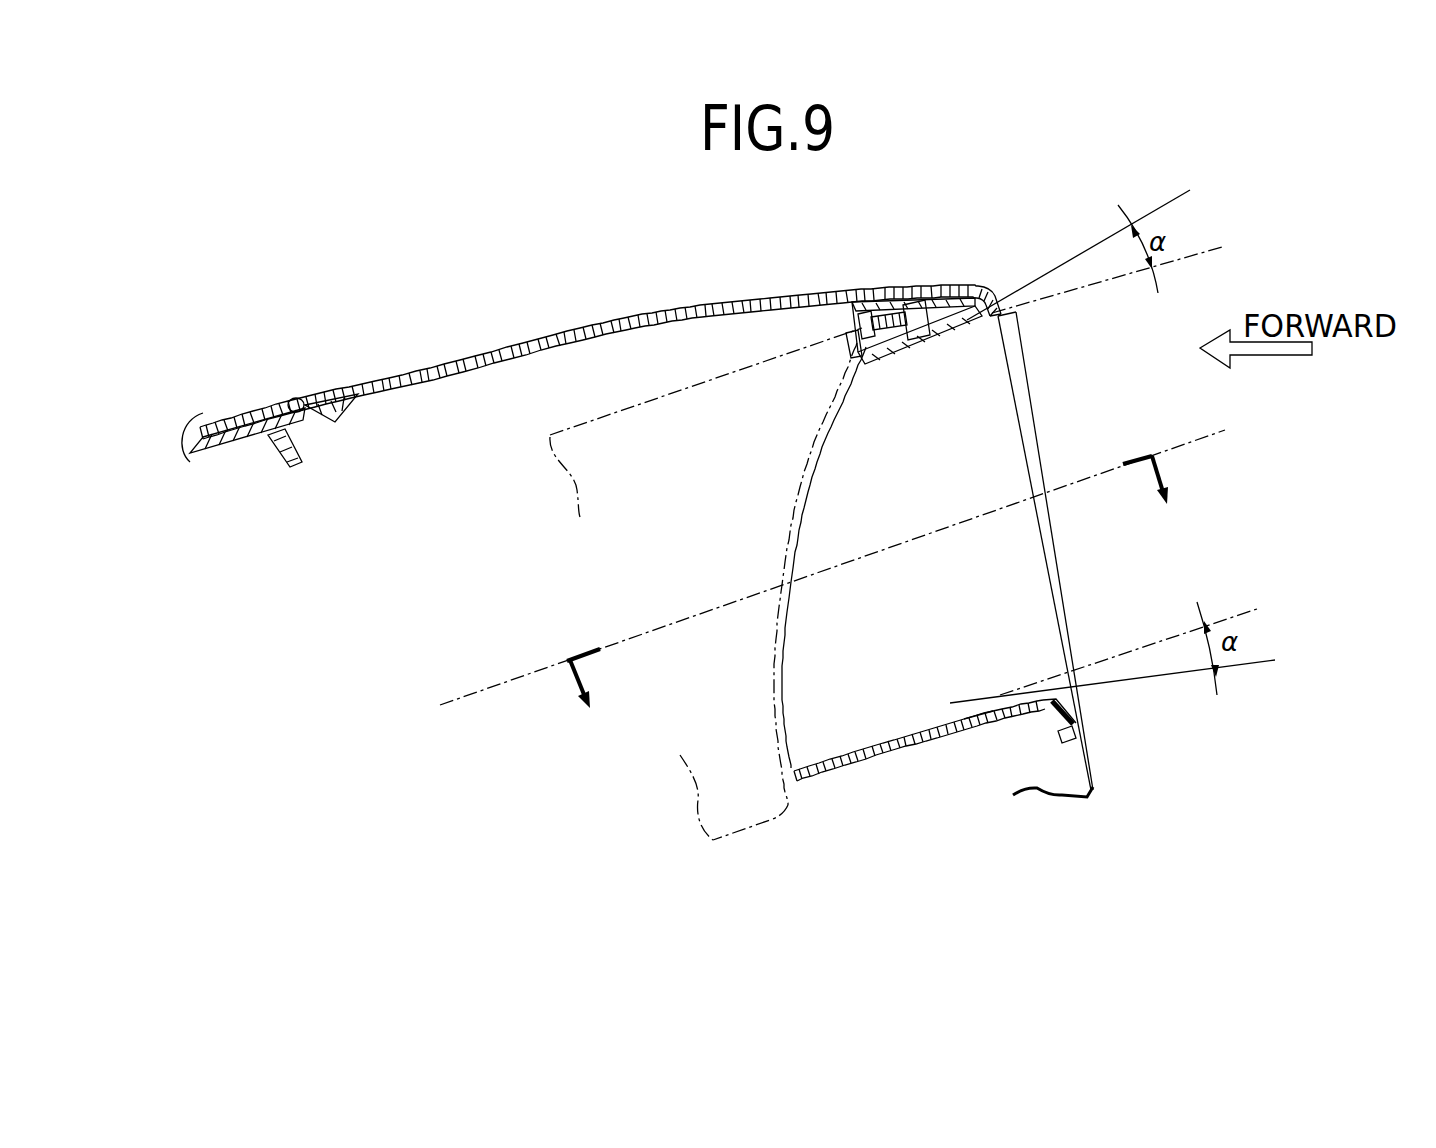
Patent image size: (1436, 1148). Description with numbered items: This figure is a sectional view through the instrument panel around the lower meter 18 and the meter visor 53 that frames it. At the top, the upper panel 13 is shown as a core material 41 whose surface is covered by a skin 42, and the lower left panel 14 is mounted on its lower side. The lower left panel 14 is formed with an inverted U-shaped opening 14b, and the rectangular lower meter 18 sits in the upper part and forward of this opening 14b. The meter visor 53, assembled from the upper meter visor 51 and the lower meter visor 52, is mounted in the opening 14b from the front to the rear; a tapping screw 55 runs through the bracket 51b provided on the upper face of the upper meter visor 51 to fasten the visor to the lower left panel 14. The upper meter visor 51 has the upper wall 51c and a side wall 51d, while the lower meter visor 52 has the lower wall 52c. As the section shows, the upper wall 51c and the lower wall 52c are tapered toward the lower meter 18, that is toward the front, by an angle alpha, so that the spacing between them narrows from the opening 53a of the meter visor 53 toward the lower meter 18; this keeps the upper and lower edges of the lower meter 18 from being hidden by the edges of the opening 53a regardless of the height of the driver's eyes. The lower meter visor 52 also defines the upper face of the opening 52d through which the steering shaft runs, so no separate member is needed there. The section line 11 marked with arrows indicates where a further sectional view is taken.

The section line XI-XI 11 is at (832, 550).
The upper panel 13 is at (258, 400).
The lower left panel 14 is at (578, 324).
The inverted U-shaped opening 14b is at (1000, 303).
The lower meter 18 is at (605, 418).
The core material 41 is at (217, 447).
The skin 42 is at (230, 420).
The upper meter visor 51 is at (923, 356).
The bracket 51b is at (863, 328).
The upper wall 51c is at (942, 335).
The left side wall 51d is at (1030, 563).
The lower meter visor 52 is at (961, 708).
The lower wall 52c is at (997, 700).
The opening 52d is at (1072, 735).
The meter visor 53 is at (848, 526).
The opening of the meter visor 53a is at (1022, 437).
The tapping screw 55 is at (862, 342).